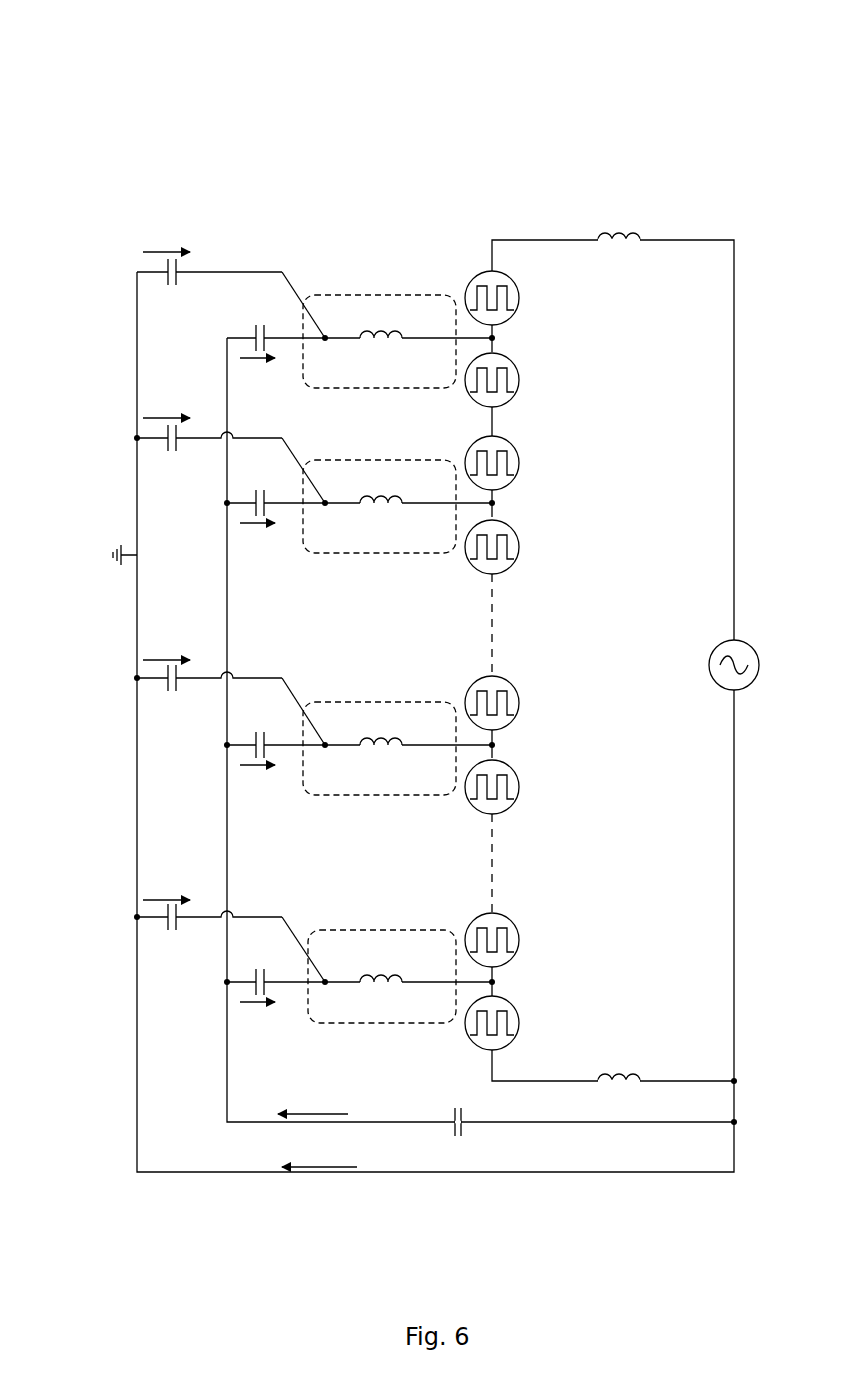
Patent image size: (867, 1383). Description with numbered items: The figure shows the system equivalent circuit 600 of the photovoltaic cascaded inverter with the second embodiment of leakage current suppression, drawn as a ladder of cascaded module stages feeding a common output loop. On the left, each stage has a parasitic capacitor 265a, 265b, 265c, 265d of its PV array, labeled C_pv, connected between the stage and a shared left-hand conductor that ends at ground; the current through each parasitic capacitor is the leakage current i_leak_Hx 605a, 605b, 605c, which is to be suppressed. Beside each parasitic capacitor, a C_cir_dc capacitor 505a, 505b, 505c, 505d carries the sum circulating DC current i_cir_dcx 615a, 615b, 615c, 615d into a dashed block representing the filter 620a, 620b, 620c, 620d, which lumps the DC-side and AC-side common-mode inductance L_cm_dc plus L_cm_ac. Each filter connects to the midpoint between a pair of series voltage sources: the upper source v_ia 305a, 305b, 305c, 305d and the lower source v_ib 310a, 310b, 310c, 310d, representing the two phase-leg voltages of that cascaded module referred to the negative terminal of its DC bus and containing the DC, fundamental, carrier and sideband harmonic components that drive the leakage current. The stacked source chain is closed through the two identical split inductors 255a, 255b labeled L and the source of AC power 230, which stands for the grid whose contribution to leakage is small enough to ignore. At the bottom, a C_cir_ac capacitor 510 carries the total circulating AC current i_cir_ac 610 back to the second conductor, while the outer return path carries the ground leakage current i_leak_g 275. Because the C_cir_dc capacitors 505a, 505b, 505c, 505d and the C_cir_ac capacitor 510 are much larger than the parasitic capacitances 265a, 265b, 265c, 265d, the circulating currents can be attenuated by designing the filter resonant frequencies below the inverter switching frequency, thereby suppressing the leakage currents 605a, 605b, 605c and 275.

The system equivalent circuit 600 is at (594, 114).
The parasitic capacitor current i_leak_Hx 605a is at (177, 214).
The parasitic capacitor current i_leak_Hx 605b is at (179, 387).
The parasitic capacitor current i_leak_Hx 605c is at (181, 634).
The parasitic capacitor 265a is at (148, 310).
The parasitic capacitor 265b is at (157, 492).
The parasitic capacitor 265c is at (155, 730).
The parasitic capacitor 265d is at (155, 967).
The C_cir_dc capacitor 505a is at (277, 294).
The C_cir_dc capacitor 505b is at (282, 464).
The C_cir_dc capacitor 505c is at (286, 704).
The C_cir_dc capacitor 505d is at (291, 936).
The circulating DC current i_cir_dcx 615a is at (303, 393).
The circulating DC current i_cir_dcx 615b is at (261, 569).
The circulating DC current i_cir_dcx 615c is at (276, 801).
The circulating DC current i_cir_dcx 615d is at (250, 1044).
The filter 620a is at (411, 294).
The filter 620b is at (433, 476).
The filter 620c is at (413, 699).
The filter 620d is at (414, 929).
The voltage source v_ia 305a is at (567, 316).
The voltage source v_ib 310a is at (561, 406).
The voltage source v_ia 305b is at (563, 479).
The voltage source v_ib 310b is at (556, 566).
The voltage source v_ia 305c is at (563, 719).
The voltage source v_ib 310c is at (561, 806).
The voltage source v_ia 305d is at (561, 959).
The voltage source v_ib 310d is at (548, 1047).
The split inductor 255a is at (646, 216).
The split inductor 255b is at (653, 1058).
The source of AC power 230 is at (762, 654).
The C_cir_ac capacitor 510 is at (477, 1141).
The circulating AC current i_cir_ac 610 is at (338, 1094).
The ground leakage current i_leak_g 275 is at (314, 1180).